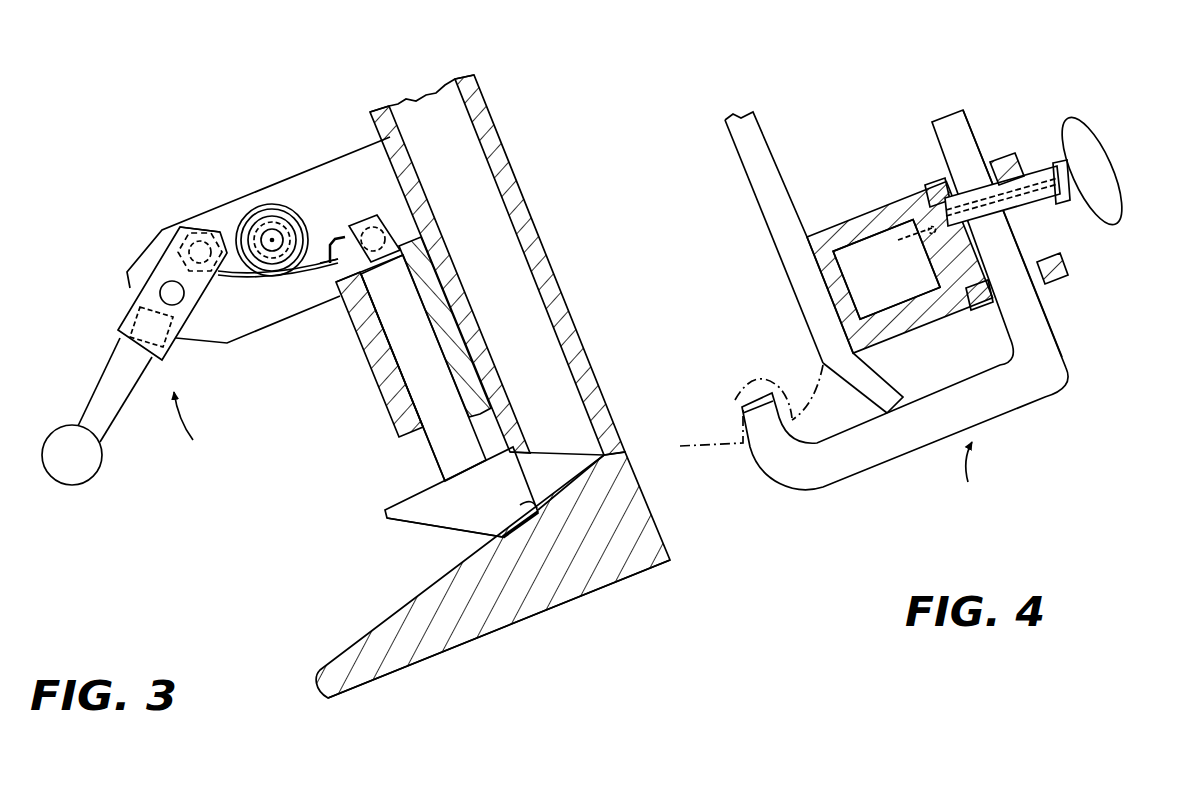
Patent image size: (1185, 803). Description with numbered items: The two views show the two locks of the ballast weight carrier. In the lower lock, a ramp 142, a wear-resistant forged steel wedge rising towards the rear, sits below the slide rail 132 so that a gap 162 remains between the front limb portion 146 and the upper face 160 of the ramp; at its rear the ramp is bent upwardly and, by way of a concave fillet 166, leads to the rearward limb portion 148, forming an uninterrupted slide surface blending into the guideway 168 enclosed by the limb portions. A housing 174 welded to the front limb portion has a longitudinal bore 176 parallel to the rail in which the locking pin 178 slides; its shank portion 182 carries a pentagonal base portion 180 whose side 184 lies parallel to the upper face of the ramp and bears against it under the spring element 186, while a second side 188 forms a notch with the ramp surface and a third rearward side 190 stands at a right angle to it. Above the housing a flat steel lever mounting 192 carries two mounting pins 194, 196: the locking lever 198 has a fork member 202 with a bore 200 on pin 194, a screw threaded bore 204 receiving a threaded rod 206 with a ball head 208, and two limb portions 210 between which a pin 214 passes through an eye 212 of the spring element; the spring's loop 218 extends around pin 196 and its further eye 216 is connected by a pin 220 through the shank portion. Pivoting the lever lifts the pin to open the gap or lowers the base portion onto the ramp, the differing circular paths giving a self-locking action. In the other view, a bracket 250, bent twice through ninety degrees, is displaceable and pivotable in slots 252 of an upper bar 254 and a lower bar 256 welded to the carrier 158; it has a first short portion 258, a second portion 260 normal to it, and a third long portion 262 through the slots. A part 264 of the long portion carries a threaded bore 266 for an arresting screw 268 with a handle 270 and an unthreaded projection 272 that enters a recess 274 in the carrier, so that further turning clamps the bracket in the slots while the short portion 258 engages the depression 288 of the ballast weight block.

In FIG. 3, the slide rail 132 is at (418, 86).
In FIG. 3, the ramp 142 is at (410, 663).
In FIG. 3, the front limb portion 146 is at (374, 120).
In FIG. 3, the rearward limb portion 148 is at (482, 92).
In FIG. 4, the carrier 158 is at (857, 217).
In FIG. 3, the upper face of the ramp 160 is at (364, 624).
In FIG. 3, the gap 162 is at (543, 452).
In FIG. 3, the concave fillet 166 is at (600, 463).
In FIG. 3, the guideway 168 is at (496, 258).
In FIG. 3, the housing 174 is at (383, 397).
In FIG. 3, the longitudinal bore 176 is at (383, 333).
In FIG. 3, the locking pin 178 is at (442, 379).
In FIG. 3, the pentagonal base portion 180 is at (503, 509).
In FIG. 3, the shank portion 182 is at (439, 465).
In FIG. 3, the side of the base portion 184 is at (518, 539).
In FIG. 3, the spring element 186 is at (298, 277).
In FIG. 3, the second side 188 is at (438, 528).
In FIG. 3, the third rearward side 190 is at (534, 504).
In FIG. 3, the lever mounting 192 is at (265, 203).
In FIG. 3, the mounting pin 194 is at (160, 293).
In FIG. 3, the mounting pin 196 is at (306, 225).
In FIG. 3, the locking lever 198 is at (201, 423).
In FIG. 3, the bore 200 is at (185, 257).
In FIG. 3, the fork member 202 is at (178, 336).
In FIG. 3, the screw threaded bore 204 is at (120, 323).
In FIG. 3, the threaded rod 206 is at (107, 432).
In FIG. 3, the ball head 208 is at (92, 485).
In FIG. 3, the limb portions 210 is at (217, 232).
In FIG. 3, the eye 212 is at (205, 222).
In FIG. 3, the pin 214 is at (192, 225).
In FIG. 3, the further eye 216 is at (320, 265).
In FIG. 3, the loop 218 is at (279, 205).
In FIG. 3, the pin 220 is at (380, 230).
In FIG. 4, the bracket 250 is at (964, 471).
In FIG. 4, the slots 252 is at (937, 183).
In FIG. 4, the upper bar 254 is at (993, 160).
In FIG. 4, the lower bar 256 is at (1061, 273).
In FIG. 4, the first short portion 258 is at (762, 471).
In FIG. 4, the second portion 260 is at (1018, 405).
In FIG. 4, the third long portion 262 is at (1060, 331).
In FIG. 4, the part of the long portion 264 is at (1014, 229).
In FIG. 4, the threaded bore 266 is at (1000, 233).
In FIG. 4, the arresting screw 268 is at (1126, 146).
In FIG. 4, the handle 270 is at (1112, 226).
In FIG. 4, the projection 272 is at (925, 259).
In FIG. 4, the recess 274 is at (918, 236).
In FIG. 4, the depression 288 is at (780, 379).